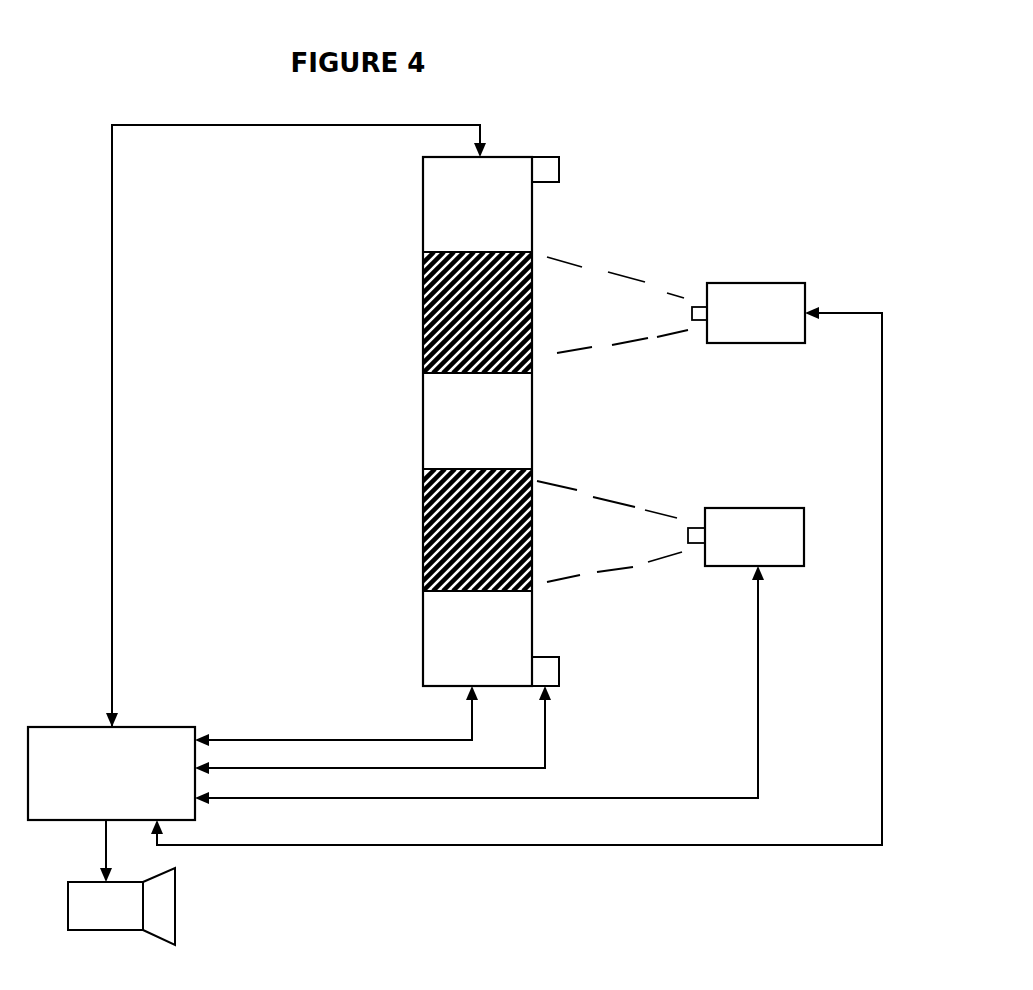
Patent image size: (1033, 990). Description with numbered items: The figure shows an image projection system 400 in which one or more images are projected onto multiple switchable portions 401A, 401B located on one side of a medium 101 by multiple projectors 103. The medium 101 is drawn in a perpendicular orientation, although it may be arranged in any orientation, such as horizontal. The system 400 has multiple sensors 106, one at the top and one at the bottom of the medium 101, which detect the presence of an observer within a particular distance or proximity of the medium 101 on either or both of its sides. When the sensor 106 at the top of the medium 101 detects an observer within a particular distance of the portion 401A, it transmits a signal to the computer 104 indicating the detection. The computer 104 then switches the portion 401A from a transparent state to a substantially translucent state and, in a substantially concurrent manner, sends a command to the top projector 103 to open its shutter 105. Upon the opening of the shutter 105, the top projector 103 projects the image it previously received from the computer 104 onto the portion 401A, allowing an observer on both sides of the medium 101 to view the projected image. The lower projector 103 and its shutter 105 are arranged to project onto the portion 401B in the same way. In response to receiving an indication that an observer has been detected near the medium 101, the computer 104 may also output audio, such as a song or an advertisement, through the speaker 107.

The image projection system 400 is at (716, 114).
The medium 101 is at (532, 238).
The switchable portion 401A is at (443, 322).
The switchable portion 401B is at (437, 510).
The sensor 106 is at (550, 163).
The projector 103 is at (763, 297).
The shutter 105 is at (690, 309).
The computer 104 is at (143, 730).
The speaker 107 is at (165, 908).